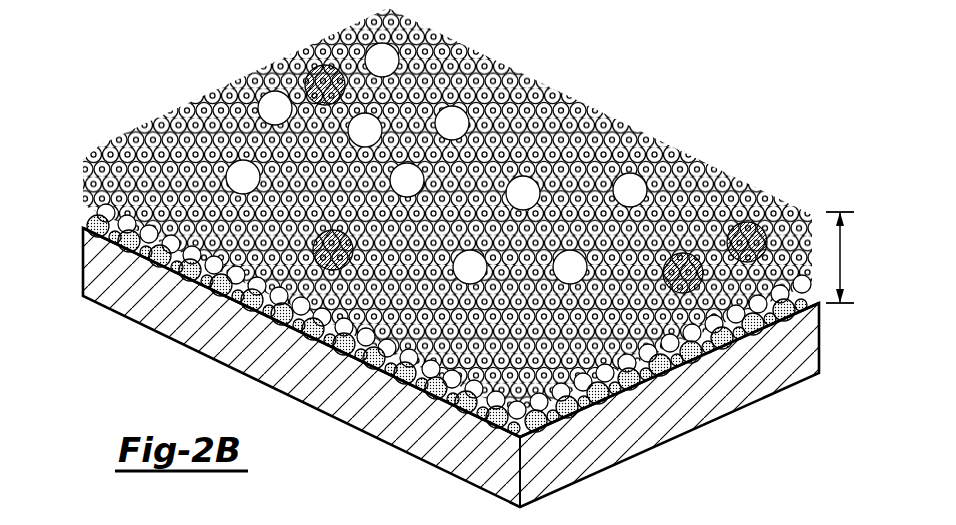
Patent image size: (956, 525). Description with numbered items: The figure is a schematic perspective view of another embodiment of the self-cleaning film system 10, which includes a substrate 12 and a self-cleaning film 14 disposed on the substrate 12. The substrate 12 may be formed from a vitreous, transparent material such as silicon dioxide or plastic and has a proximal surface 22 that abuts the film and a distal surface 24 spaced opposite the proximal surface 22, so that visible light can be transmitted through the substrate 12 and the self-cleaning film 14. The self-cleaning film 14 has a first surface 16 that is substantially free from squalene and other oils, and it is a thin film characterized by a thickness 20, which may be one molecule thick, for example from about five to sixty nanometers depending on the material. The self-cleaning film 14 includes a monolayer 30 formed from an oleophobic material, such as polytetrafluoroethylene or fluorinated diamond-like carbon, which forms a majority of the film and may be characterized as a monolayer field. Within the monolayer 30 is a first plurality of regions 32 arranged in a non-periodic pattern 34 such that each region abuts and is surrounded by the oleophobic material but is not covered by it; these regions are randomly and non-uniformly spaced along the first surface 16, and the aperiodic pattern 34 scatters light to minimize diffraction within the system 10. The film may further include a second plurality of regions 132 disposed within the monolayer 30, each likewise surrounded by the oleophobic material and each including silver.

The self-cleaning film system 10 is at (451, 255).
The substrate 12 is at (812, 345).
The self-cleaning film 14 is at (173, 240).
The first surface 16 is at (437, 218).
The thickness 20 is at (850, 257).
The proximal surface 22 is at (100, 238).
The distal surface 24 is at (95, 243).
The monolayer 30 is at (563, 118).
The first plurality of regions 32 is at (382, 62).
The non-periodic pattern 34 is at (503, 47).
The second plurality of regions 132 is at (750, 238).